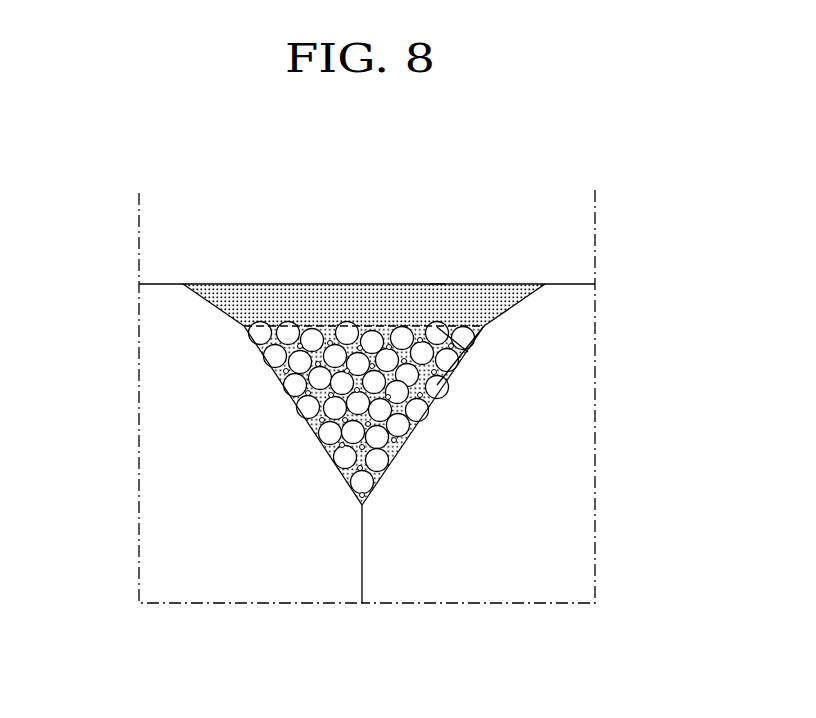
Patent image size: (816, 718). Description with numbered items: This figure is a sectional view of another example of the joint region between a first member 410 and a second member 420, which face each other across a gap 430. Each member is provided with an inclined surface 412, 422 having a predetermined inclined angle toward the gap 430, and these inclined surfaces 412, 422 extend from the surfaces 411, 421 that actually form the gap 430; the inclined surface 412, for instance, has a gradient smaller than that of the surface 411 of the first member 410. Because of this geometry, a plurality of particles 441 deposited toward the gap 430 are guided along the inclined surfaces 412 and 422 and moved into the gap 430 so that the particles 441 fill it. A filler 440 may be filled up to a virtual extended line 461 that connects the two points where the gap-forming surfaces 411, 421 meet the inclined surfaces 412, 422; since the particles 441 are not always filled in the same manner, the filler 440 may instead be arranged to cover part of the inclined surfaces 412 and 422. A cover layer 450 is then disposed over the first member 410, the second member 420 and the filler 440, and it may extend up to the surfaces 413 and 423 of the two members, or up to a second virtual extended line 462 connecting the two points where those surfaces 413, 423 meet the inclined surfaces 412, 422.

The first member 410 is at (148, 440).
The second member 420 is at (585, 439).
The surface 411 is at (322, 448).
The surface 421 is at (403, 448).
The inclined surface 412 is at (213, 303).
The inclined surface 422 is at (516, 302).
The surface 413 is at (164, 284).
The surface 423 is at (560, 284).
The gap 430 is at (384, 333).
The filler 440 is at (342, 308).
The particles 441 is at (433, 383).
The cover layer 450 is at (283, 295).
The virtual extended line 461 is at (468, 352).
The virtual extended line 462 is at (437, 284).